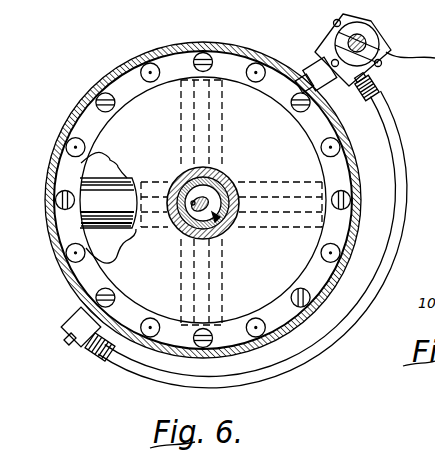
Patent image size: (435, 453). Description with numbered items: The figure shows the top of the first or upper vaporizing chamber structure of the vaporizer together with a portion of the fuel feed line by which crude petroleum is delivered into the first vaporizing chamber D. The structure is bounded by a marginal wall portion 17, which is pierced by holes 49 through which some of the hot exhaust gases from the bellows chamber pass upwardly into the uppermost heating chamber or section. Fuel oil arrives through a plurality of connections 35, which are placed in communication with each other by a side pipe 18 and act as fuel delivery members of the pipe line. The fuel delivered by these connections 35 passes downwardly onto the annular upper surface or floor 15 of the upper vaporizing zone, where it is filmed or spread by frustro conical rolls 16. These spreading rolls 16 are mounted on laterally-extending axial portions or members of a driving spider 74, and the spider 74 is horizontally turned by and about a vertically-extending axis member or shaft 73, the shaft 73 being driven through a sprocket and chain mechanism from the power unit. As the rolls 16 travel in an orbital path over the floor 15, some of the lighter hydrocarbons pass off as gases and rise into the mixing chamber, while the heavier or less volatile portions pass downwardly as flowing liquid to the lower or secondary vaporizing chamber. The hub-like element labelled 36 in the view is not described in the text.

The annular upper surface or floor 15 is at (128, 116).
The frustro conical rolls 16 is at (229, 80).
The marginal wall portion 17 is at (60, 130).
The side pipe 18 is at (402, 142).
The connections 35 is at (306, 69).
The hub ring 36 is at (180, 230).
The holes 49 is at (153, 71).
The shaft 73 is at (226, 228).
The spider 74 is at (229, 182).
The vaporizing chamber D is at (327, 298).